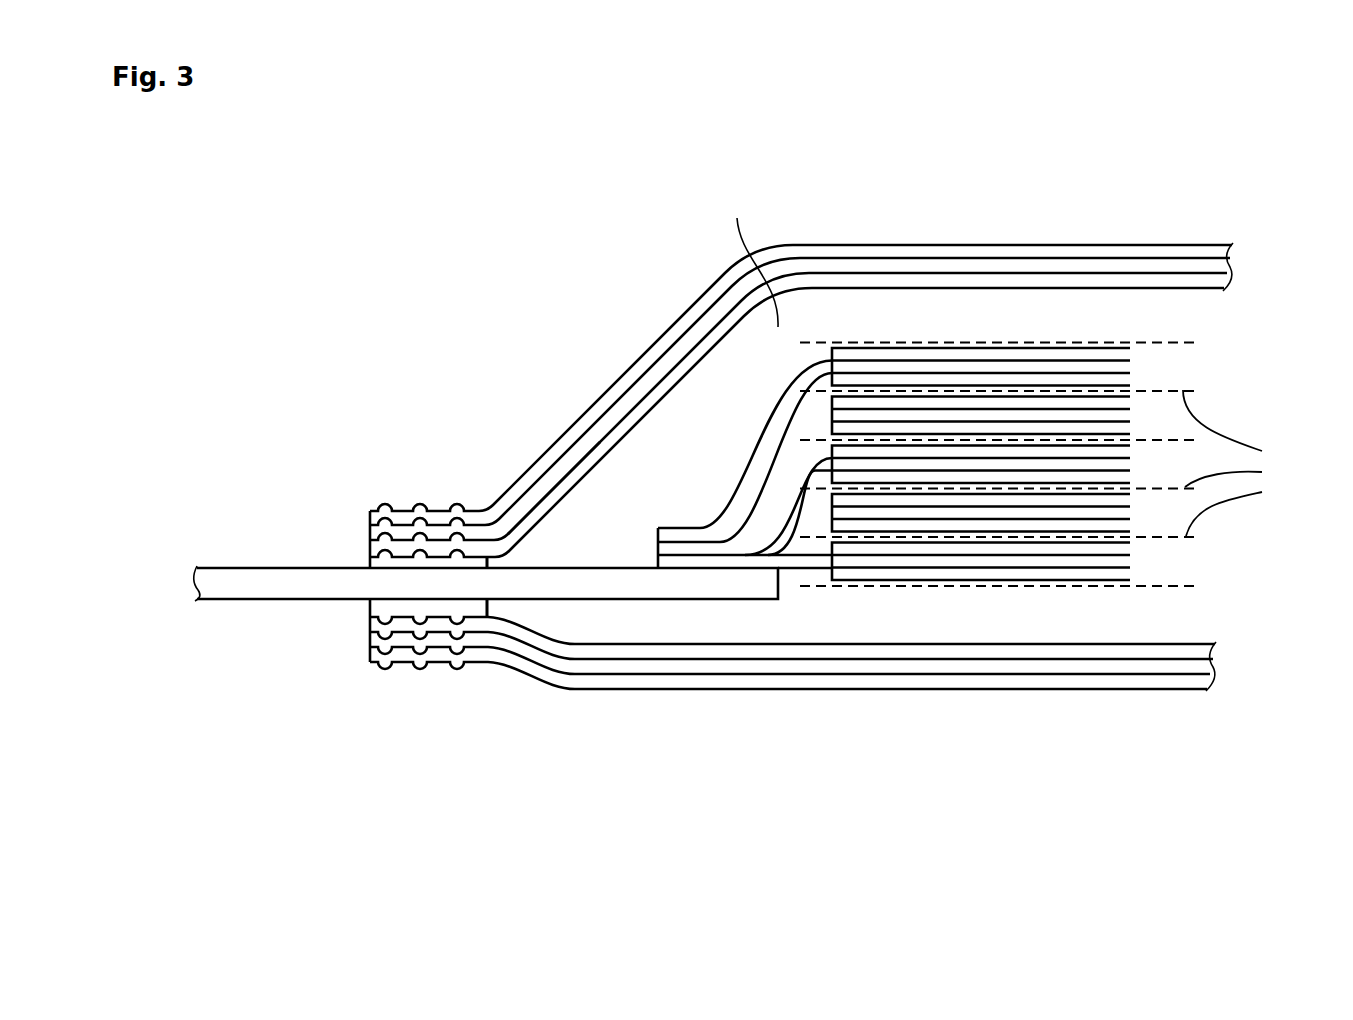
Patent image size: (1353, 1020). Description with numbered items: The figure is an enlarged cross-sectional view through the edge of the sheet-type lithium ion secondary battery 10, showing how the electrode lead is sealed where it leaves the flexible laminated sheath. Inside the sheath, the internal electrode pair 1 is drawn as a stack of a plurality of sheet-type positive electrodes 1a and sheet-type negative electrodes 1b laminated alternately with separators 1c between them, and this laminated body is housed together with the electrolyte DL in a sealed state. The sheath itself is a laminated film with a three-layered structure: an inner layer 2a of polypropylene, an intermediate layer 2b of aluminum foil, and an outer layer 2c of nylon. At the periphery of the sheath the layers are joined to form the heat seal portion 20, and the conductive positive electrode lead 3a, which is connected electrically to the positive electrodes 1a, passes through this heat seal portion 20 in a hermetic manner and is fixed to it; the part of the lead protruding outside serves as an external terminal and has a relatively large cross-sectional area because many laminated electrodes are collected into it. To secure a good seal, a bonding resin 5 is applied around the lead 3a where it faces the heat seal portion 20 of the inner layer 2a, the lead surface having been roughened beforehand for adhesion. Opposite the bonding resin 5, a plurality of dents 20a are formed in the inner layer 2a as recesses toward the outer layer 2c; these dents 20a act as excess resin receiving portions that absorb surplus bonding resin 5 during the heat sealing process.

The internal electrode pair 1 is at (866, 333).
The sheet-type positive electrodes 1a is at (1092, 363).
The sheet-type negative electrodes 1b is at (995, 505).
The separators 1c is at (1262, 451).
The inner layer 2a is at (570, 477).
The intermediate layer 2b is at (503, 523).
The outer layer 2c is at (562, 680).
The positive electrode lead 3a is at (246, 590).
The bonding resin 5 is at (370, 610).
The sheet-type lithium ion secondary battery 10 is at (633, 318).
The heat seal portion 20 is at (378, 571).
The dents 20a is at (455, 535).
The electrolyte DL is at (748, 253).